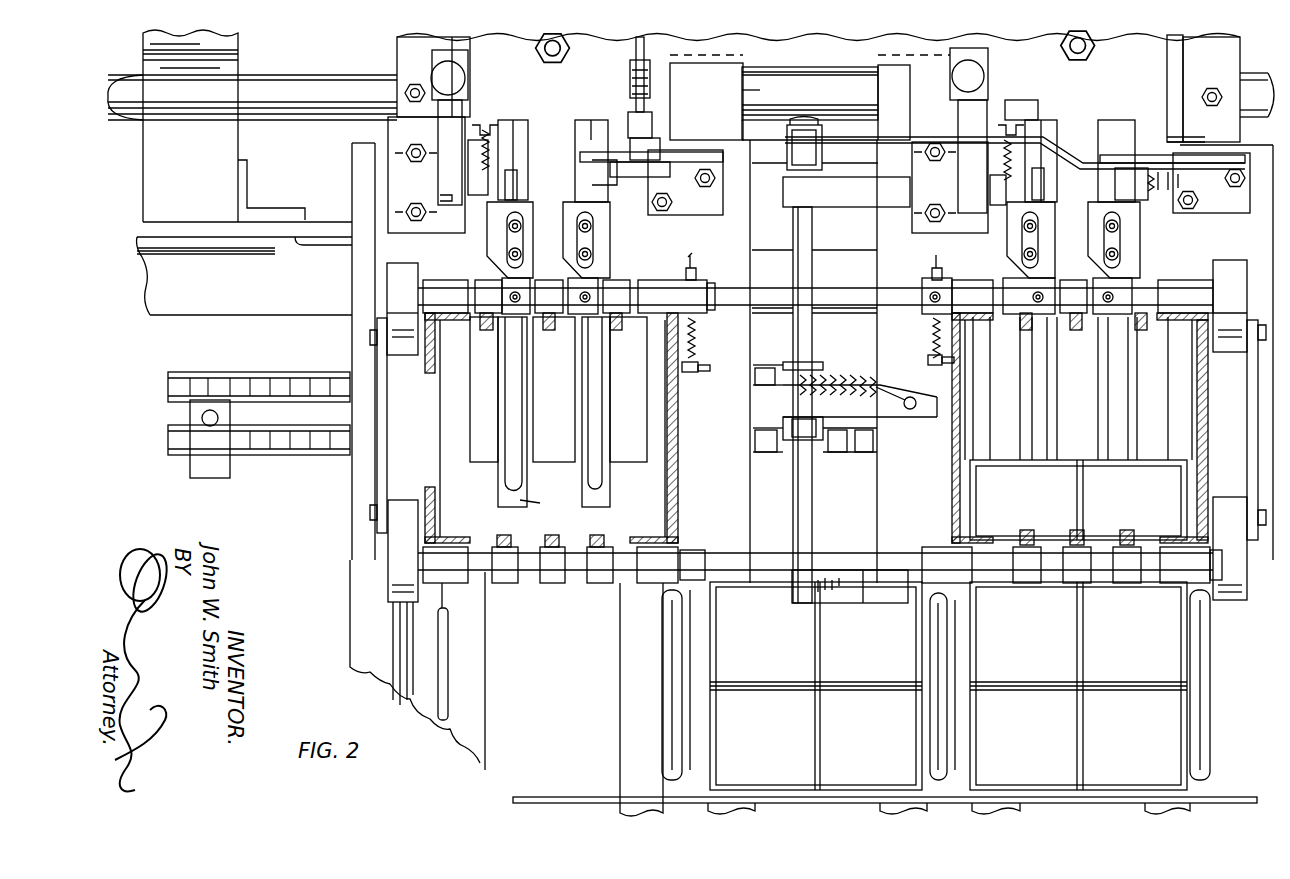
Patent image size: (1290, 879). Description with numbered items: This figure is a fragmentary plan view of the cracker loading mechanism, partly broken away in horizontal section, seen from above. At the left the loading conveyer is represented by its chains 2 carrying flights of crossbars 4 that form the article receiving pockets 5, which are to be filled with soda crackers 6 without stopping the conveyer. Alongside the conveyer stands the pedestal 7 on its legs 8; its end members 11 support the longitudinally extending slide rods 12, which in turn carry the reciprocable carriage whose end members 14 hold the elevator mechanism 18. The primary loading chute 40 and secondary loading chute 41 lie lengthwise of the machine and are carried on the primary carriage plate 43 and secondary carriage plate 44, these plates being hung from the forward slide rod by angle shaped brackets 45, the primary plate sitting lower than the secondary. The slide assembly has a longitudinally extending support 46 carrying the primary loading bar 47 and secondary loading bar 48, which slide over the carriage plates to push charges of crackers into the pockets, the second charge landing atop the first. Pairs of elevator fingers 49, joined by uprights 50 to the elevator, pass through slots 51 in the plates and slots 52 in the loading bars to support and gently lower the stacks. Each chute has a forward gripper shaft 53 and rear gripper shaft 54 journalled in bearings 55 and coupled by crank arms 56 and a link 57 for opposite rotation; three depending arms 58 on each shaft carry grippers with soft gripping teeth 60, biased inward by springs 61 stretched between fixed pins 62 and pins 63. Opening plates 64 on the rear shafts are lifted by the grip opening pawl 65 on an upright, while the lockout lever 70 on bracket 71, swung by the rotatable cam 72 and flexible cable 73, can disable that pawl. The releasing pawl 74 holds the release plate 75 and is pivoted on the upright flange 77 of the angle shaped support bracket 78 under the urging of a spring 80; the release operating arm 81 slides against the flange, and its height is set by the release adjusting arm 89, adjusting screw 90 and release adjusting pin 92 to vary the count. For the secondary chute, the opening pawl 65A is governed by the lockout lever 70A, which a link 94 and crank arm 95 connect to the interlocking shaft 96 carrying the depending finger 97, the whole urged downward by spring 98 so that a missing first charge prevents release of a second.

The chains 2 is at (170, 407).
The crossbars 4 is at (350, 632).
The article receiving pockets 5 is at (373, 250).
The soda crackers 6 is at (592, 360).
The support or pedestal 7 is at (312, 212).
The legs 8 is at (473, 250).
The end members of the pedestal 11 is at (227, 138).
The slide rods 12 is at (270, 86).
The end members of the carriage 14 is at (405, 45).
The elevator mechanism 18 is at (773, 152).
The primary loading chute 40 is at (665, 458).
The secondary loading chute 41 is at (950, 442).
The primary carriage plate 43 is at (365, 490).
The secondary carriage plate 44 is at (900, 507).
The angle shaped brackets 45 is at (878, 84).
The longitudinally extending support 46 is at (778, 96).
The primary loading bar 47 is at (632, 390).
The secondary loading bar 48 is at (1160, 440).
The elevator fingers 49 is at (592, 478).
The uprights 50 is at (595, 185).
The slots in carriage plates 51 is at (590, 500).
The slots in loading bars 52 is at (612, 422).
The forward gripper shaft 53 is at (578, 583).
The rear gripper shaft 54 is at (645, 283).
The bearings 55 is at (433, 295).
The crank arms 56 is at (405, 355).
The link 57 is at (383, 416).
The depending arms 58 is at (480, 318).
The gripping teeth 60 is at (488, 335).
The springs 61 is at (700, 330).
The fixed pins 62 is at (700, 365).
The pins 63 is at (698, 272).
The opening plates 64 is at (612, 233).
The grip opening pawl 65 is at (595, 190).
The opening pawl 65A is at (1197, 198).
The lockout lever 70 is at (605, 150).
The lockout lever 70A is at (1130, 170).
The bracket 71 is at (712, 150).
The rotatable cam 72 is at (655, 160).
The flexible cable 73 is at (638, 63).
The releasing pawl 74 is at (520, 165).
The release plate 75 is at (533, 240).
The upright flange 77 is at (465, 112).
The angle shaped support bracket 78 is at (388, 135).
The spring 80 is at (485, 150).
The release operating arm 81 is at (450, 205).
The release adjusting arm 89 is at (440, 172).
The adjusting screw 90 is at (450, 63).
The release adjusting pin 92 is at (438, 198).
The link 94 is at (898, 137).
The crank arm 95 is at (822, 150).
The interlocking shaft 96 is at (812, 225).
The depending finger 97 is at (845, 580).
The spring 98 is at (838, 370).